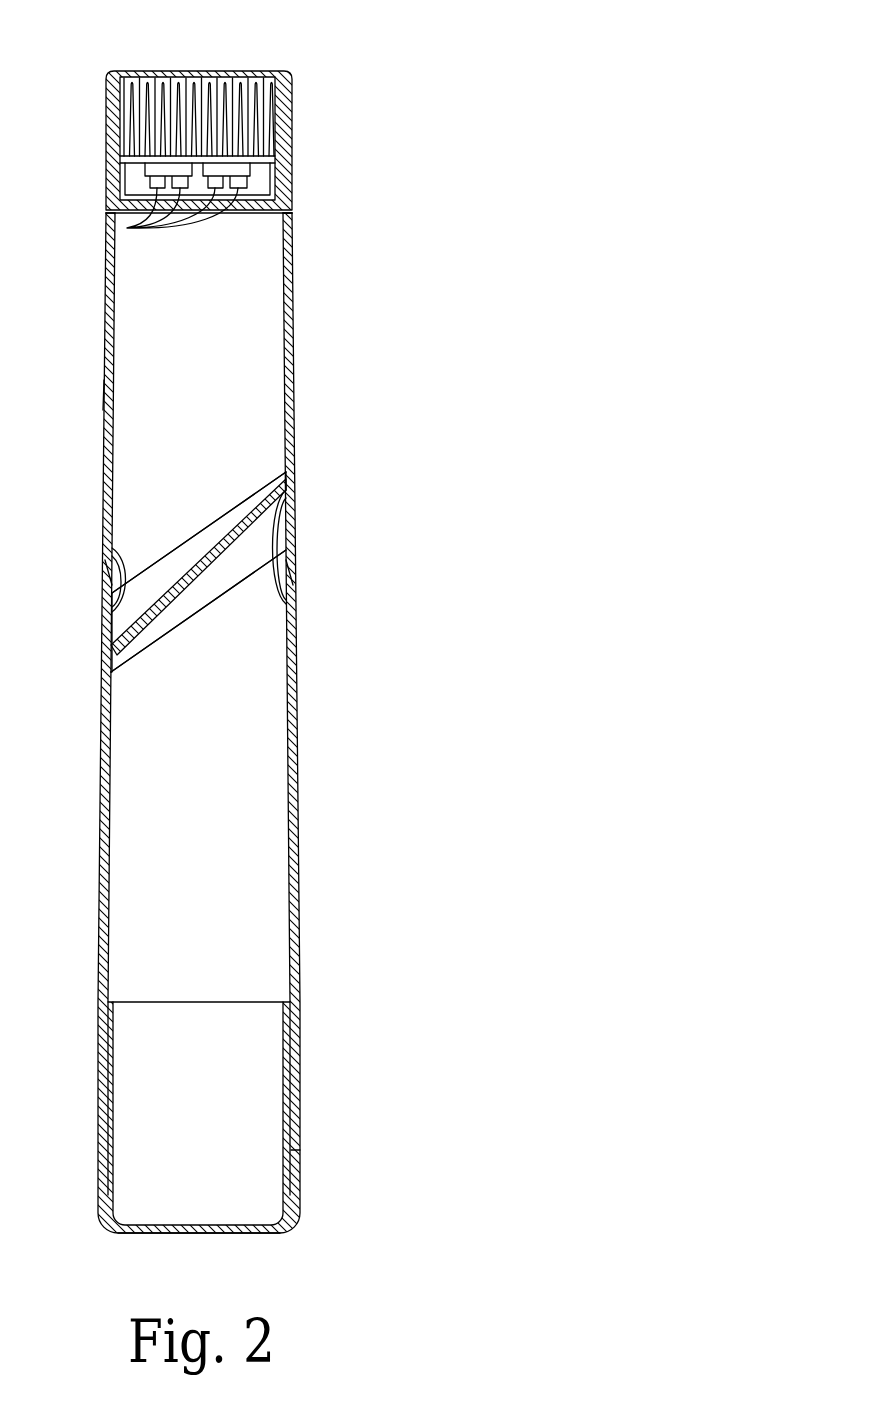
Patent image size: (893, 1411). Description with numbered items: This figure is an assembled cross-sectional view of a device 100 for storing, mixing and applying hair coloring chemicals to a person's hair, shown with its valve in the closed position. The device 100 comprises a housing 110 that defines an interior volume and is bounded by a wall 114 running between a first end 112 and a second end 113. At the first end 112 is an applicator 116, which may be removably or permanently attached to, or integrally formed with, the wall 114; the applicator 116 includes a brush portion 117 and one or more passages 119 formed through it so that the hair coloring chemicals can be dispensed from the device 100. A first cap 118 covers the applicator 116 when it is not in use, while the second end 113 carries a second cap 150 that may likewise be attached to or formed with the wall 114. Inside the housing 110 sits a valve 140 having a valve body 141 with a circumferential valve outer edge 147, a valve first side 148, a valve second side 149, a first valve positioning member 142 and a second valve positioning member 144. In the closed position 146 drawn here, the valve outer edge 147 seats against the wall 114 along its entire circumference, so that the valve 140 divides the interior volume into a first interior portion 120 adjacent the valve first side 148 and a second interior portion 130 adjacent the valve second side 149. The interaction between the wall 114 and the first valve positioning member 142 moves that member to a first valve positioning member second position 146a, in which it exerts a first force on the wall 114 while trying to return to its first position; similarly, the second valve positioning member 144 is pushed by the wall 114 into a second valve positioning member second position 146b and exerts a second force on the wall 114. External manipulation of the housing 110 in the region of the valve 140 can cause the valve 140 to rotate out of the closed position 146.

The device 100 is at (478, 105).
The housing 110 is at (298, 740).
The first end 112 is at (291, 216).
The second end 113 is at (299, 1158).
The wall 114 is at (110, 394).
The applicator 116 is at (273, 180).
The brush portion 117 is at (130, 116).
The first cap 118 is at (206, 71).
The passages 119 is at (127, 228).
The first interior portion 120 is at (212, 363).
The second interior portion 130 is at (213, 817).
The valve 140 is at (200, 612).
The valve body 141 is at (200, 565).
The first valve positioning member 142 is at (122, 560).
The second valve positioning member 144 is at (275, 600).
The closed position 146 is at (220, 578).
The first valve positioning member second position 146a is at (111, 575).
The second valve positioning member second position 146b is at (286, 572).
The valve outer edge 147 is at (287, 472).
The valve first side 148 is at (268, 490).
The valve second side 149 is at (138, 652).
The second cap 150 is at (190, 1236).